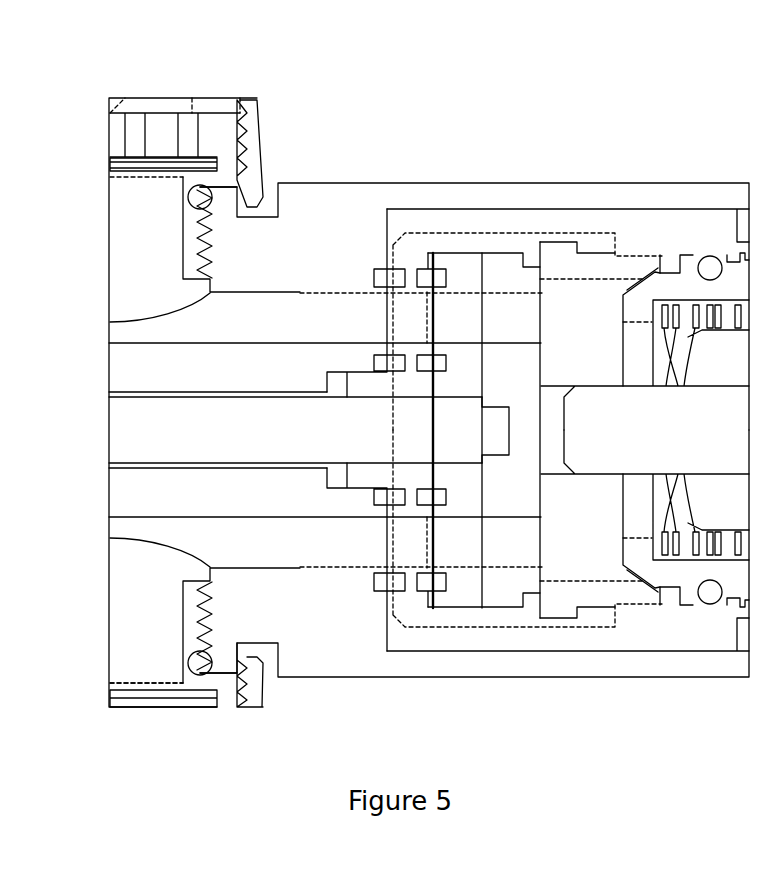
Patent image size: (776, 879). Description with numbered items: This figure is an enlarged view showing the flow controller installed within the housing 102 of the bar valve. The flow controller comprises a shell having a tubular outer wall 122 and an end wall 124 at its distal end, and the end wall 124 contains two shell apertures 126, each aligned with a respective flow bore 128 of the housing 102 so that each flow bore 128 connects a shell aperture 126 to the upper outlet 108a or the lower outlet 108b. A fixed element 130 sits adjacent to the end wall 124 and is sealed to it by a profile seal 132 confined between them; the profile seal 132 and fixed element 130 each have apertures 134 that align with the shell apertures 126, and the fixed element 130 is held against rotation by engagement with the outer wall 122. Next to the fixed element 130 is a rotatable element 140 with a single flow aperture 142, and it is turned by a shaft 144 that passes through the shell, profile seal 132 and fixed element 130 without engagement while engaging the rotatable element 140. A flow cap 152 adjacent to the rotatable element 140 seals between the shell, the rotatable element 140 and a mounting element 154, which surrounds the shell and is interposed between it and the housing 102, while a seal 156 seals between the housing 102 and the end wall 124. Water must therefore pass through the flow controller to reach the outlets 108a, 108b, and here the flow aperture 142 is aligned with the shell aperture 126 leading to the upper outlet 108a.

The housing 102 is at (338, 183).
The upper outlet 108a is at (236, 100).
The lower outlet 108b is at (218, 707).
The tubular outer wall 122 is at (437, 630).
The end wall 124 is at (407, 544).
The shell aperture 126 is at (415, 317).
The flow bore 128 is at (343, 317).
The fixed element 130 is at (464, 588).
The profile seal 132 is at (428, 497).
The apertures 134 is at (462, 317).
The rotatable element 140 is at (517, 580).
The flow aperture 142 is at (508, 317).
The shaft 144 is at (175, 393).
The flow cap 152 is at (596, 600).
The mounting element 154 is at (553, 220).
The seal 156 is at (380, 500).